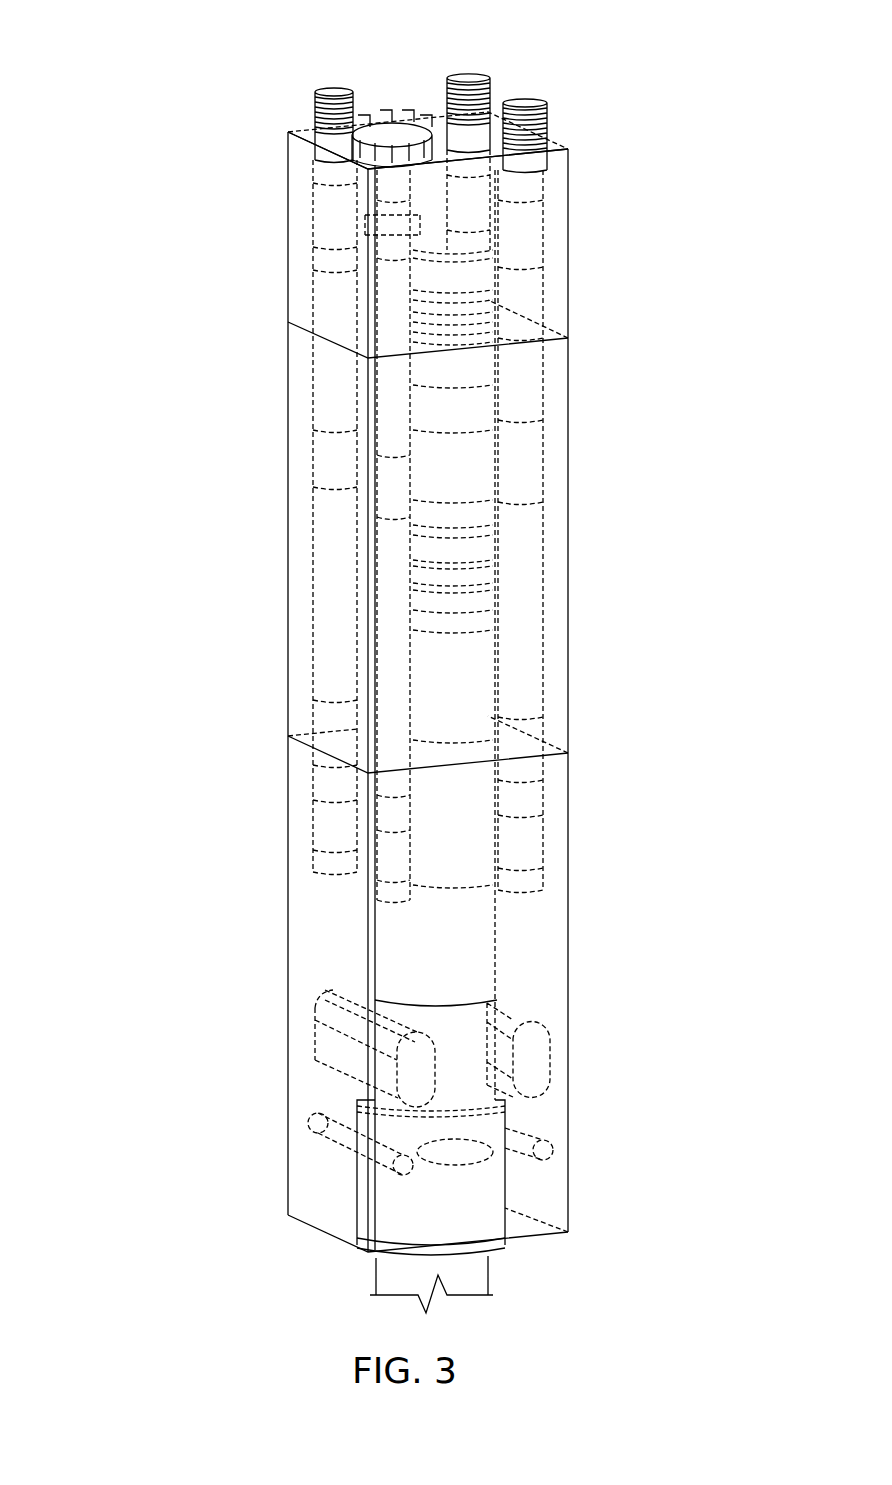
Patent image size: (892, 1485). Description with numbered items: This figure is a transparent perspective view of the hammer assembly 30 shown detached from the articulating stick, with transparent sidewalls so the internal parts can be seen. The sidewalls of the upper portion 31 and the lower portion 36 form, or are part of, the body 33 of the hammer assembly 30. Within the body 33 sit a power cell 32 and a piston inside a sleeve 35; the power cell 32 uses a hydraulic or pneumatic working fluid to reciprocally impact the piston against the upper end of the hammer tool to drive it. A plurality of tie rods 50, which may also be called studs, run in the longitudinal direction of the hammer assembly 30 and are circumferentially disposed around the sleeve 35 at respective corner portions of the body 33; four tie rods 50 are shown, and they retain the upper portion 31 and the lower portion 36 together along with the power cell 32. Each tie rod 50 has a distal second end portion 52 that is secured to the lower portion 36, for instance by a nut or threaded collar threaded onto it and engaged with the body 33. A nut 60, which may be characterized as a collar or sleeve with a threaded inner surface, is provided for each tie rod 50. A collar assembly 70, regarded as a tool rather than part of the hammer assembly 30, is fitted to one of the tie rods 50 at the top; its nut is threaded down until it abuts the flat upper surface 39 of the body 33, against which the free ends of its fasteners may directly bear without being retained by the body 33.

The hammer assembly 30 is at (185, 148).
The upper portion 31 is at (270, 273).
The power cell 32 is at (488, 290).
The body 33 is at (368, 358).
The sleeve 35 is at (455, 478).
The lower portion 36 is at (315, 943).
The upper surface 39 is at (300, 130).
The tie rods 50 is at (315, 100).
The second end portion 52 is at (305, 760).
The nut 60 is at (395, 258).
The collar assembly 70 is at (393, 97).